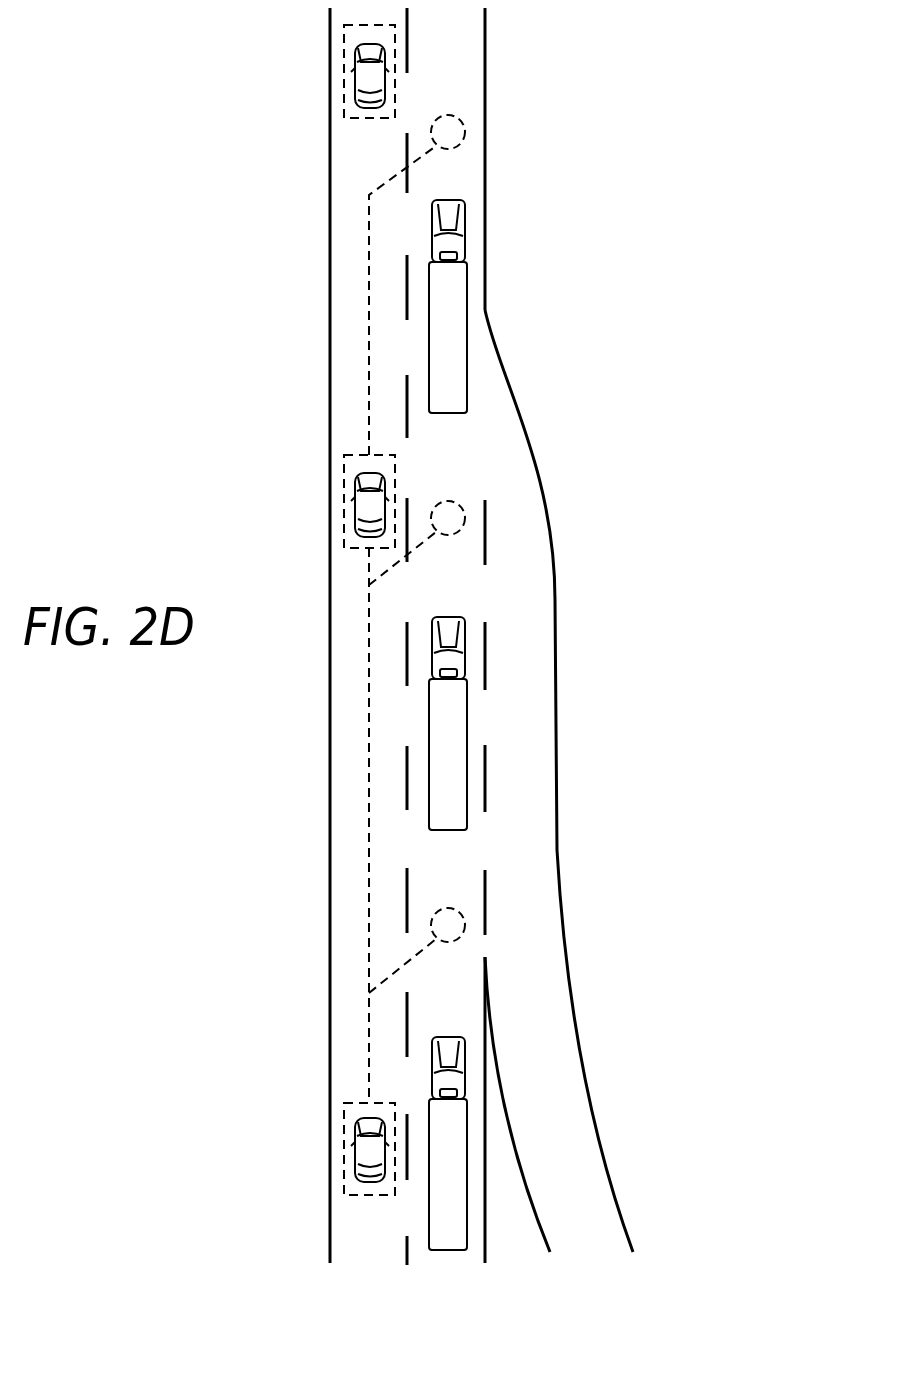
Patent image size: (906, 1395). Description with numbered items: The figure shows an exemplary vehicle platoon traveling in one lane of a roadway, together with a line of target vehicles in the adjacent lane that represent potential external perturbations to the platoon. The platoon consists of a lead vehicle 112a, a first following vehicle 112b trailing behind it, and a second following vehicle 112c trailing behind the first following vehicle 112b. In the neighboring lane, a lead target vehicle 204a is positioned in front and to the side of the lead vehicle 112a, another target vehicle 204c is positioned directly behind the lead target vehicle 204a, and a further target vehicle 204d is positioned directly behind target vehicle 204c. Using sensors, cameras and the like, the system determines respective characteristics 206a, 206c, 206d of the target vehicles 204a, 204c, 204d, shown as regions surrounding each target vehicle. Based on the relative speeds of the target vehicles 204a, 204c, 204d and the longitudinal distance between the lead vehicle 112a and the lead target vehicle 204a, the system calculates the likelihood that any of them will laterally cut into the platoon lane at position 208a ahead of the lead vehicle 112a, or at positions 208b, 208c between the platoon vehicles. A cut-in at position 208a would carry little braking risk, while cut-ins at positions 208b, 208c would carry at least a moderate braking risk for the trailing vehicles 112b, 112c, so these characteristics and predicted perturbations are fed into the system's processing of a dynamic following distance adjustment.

The lead vehicle 112a is at (468, 322).
The first following vehicle 112b is at (468, 717).
The second following vehicle 112c is at (468, 1123).
The lead target vehicle 204a is at (357, 78).
The target vehicle 204c is at (357, 510).
The target vehicle 204d is at (357, 1157).
The characteristic of target vehicle 206a is at (345, 45).
The characteristic of target vehicle 206c is at (345, 489).
The characteristic of target vehicle 206d is at (345, 1120).
The position 208a is at (466, 132).
The position 208b is at (466, 518).
The position 208c is at (466, 925).